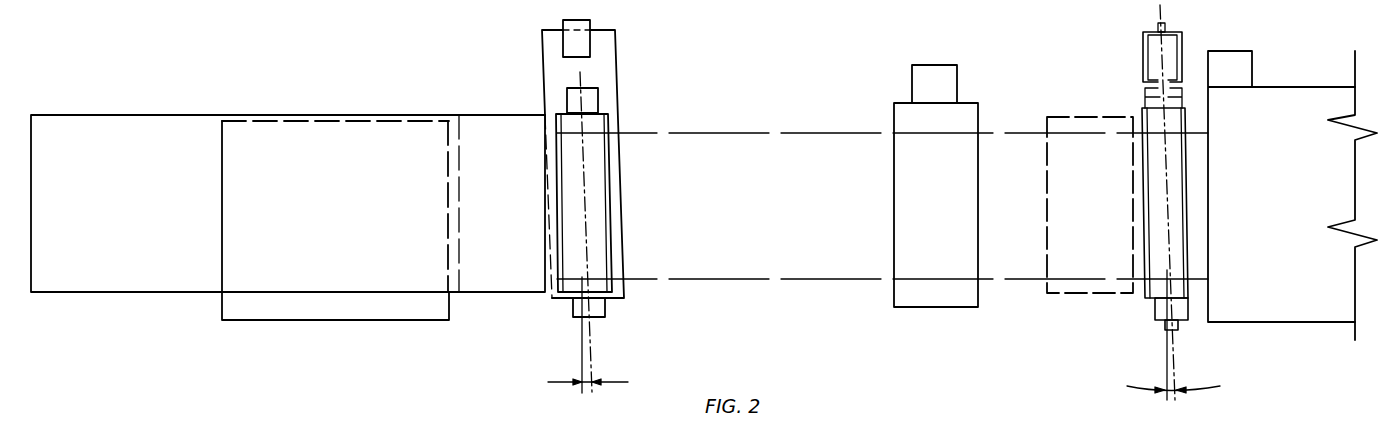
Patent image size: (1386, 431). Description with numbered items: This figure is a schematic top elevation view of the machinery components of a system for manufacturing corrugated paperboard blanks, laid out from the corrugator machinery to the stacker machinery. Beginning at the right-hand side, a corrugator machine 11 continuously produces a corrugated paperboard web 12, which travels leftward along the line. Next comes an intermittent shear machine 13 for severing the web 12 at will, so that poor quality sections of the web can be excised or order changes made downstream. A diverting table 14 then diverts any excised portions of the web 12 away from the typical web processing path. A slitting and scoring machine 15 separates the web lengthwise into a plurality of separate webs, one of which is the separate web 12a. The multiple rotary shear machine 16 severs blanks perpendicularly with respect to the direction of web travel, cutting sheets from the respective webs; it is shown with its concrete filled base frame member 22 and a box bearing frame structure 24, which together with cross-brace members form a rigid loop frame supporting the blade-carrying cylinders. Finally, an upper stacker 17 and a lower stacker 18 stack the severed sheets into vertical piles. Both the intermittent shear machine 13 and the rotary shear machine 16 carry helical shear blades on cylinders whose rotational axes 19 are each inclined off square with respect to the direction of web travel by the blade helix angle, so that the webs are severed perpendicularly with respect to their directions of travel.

The corrugator machine 11 is at (1303, 322).
The corrugated paperboard web 12 is at (1023, 270).
The separate web 12a is at (805, 268).
The intermittent shear machine 13 is at (1185, 328).
The diverting table 14 is at (1099, 294).
The slitting and scoring machine 15 is at (948, 313).
The multiple rotary shear machine 16 is at (601, 112).
The upper stacker 17 is at (487, 99).
The lower stacker 18 is at (340, 321).
The rotational axis 19 is at (596, 362).
The base frame member 22 is at (608, 57).
The box bearing frame structure 24 is at (612, 237).